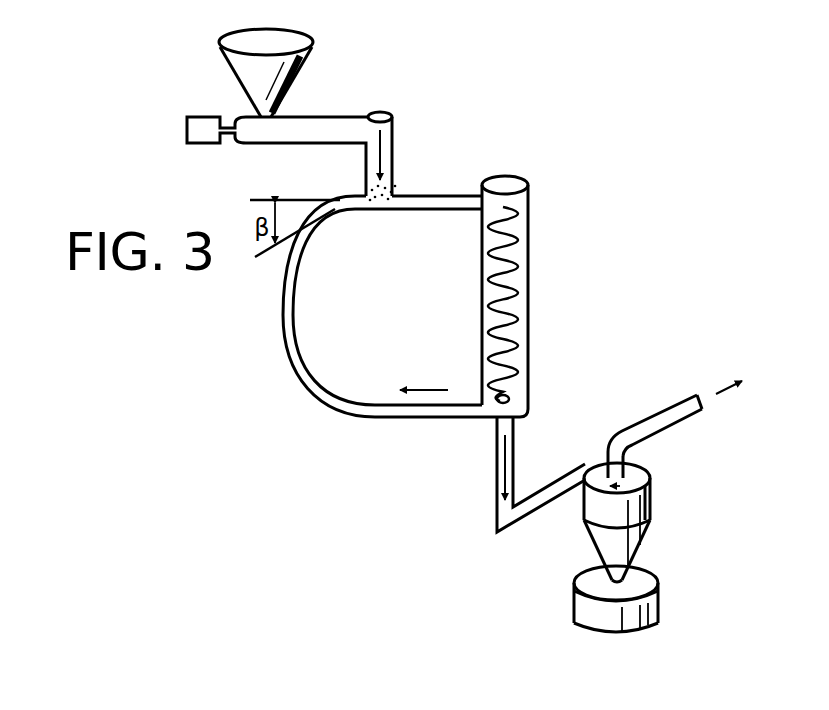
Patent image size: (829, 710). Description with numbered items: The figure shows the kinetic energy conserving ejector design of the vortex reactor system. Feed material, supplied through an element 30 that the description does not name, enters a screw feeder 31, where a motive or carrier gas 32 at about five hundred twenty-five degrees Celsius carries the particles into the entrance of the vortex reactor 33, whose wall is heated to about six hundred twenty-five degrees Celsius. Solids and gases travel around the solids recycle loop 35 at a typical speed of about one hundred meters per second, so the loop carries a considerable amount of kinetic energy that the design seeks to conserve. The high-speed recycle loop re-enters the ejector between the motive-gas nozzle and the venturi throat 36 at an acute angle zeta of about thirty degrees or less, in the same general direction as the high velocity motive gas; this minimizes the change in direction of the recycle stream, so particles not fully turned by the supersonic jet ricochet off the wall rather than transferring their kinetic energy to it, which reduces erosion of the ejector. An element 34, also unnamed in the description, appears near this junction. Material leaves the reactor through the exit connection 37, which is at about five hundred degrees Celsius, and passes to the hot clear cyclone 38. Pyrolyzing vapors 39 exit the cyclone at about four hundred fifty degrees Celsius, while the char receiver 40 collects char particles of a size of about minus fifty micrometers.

The feed hopper / funnel 30 is at (312, 37).
The screw feeder 31 is at (334, 116).
The motive or carrier gas 32 is at (362, 193).
The vortex reactor 33 is at (528, 327).
The particle stream 34 is at (394, 211).
The solids recycle loop 35 is at (283, 317).
The venturi throat 36 is at (362, 212).
The exit connection 37 is at (527, 497).
The hot clear cyclone 38 is at (652, 527).
The pyrolyzing vapors 39 is at (700, 412).
The char receiver 40 is at (658, 597).